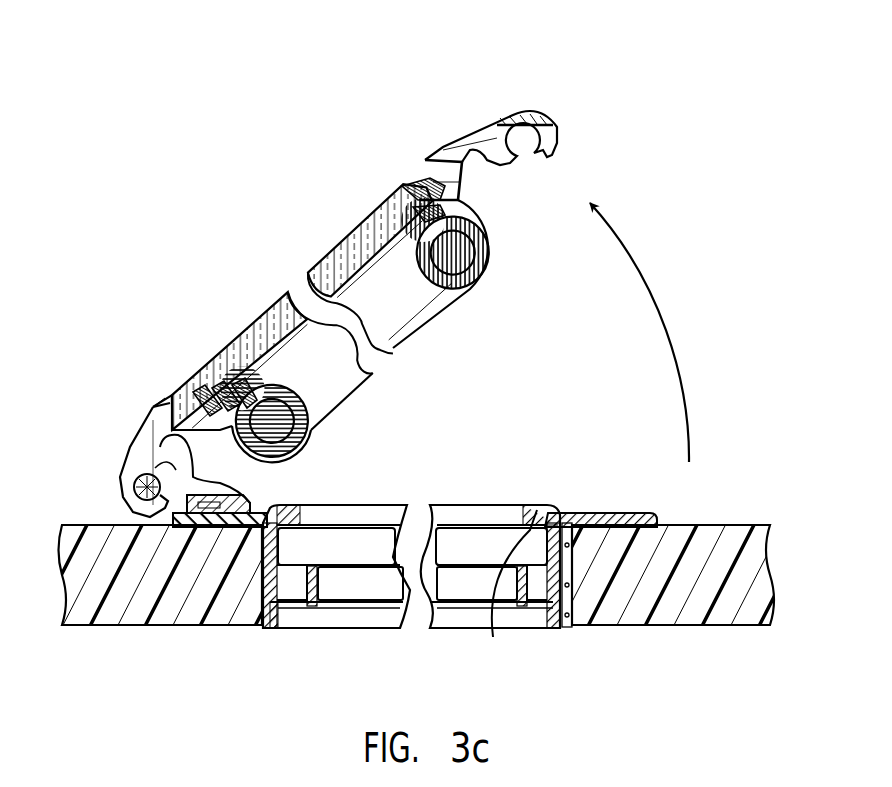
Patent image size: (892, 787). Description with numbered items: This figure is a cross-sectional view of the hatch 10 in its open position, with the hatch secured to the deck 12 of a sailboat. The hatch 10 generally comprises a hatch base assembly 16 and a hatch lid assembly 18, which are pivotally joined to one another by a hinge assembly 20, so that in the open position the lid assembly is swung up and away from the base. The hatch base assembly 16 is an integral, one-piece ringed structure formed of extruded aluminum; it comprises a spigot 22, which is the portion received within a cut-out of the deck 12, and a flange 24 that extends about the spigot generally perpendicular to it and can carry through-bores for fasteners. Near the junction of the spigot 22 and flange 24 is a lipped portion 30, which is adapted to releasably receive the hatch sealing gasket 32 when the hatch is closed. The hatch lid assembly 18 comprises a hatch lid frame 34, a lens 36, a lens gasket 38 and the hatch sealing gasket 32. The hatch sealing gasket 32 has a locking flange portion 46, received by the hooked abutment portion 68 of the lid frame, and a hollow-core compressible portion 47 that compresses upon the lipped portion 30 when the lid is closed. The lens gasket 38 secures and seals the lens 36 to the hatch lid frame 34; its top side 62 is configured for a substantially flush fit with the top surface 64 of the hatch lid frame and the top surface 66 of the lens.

The hatch 10 is at (737, 95).
The deck 12 is at (700, 595).
The hatch base assembly 16 is at (333, 640).
The hatch lid assembly 18 is at (447, 130).
The hinge assembly 20 is at (153, 430).
The spigot 22 is at (560, 558).
The flange 24 is at (628, 510).
The lipped portion 30 is at (511, 596).
The hatch sealing gasket 32 is at (308, 375).
The hatch lid frame 34 is at (472, 157).
The lens 36 is at (343, 245).
The lens gasket 38 is at (425, 160).
The locking flange portion 46 is at (243, 377).
The compressible portion 47 is at (270, 450).
The top side 62 is at (200, 363).
The top surface 64 is at (167, 398).
The top surface 66 is at (287, 293).
The hooked abutment portion 68 is at (202, 363).